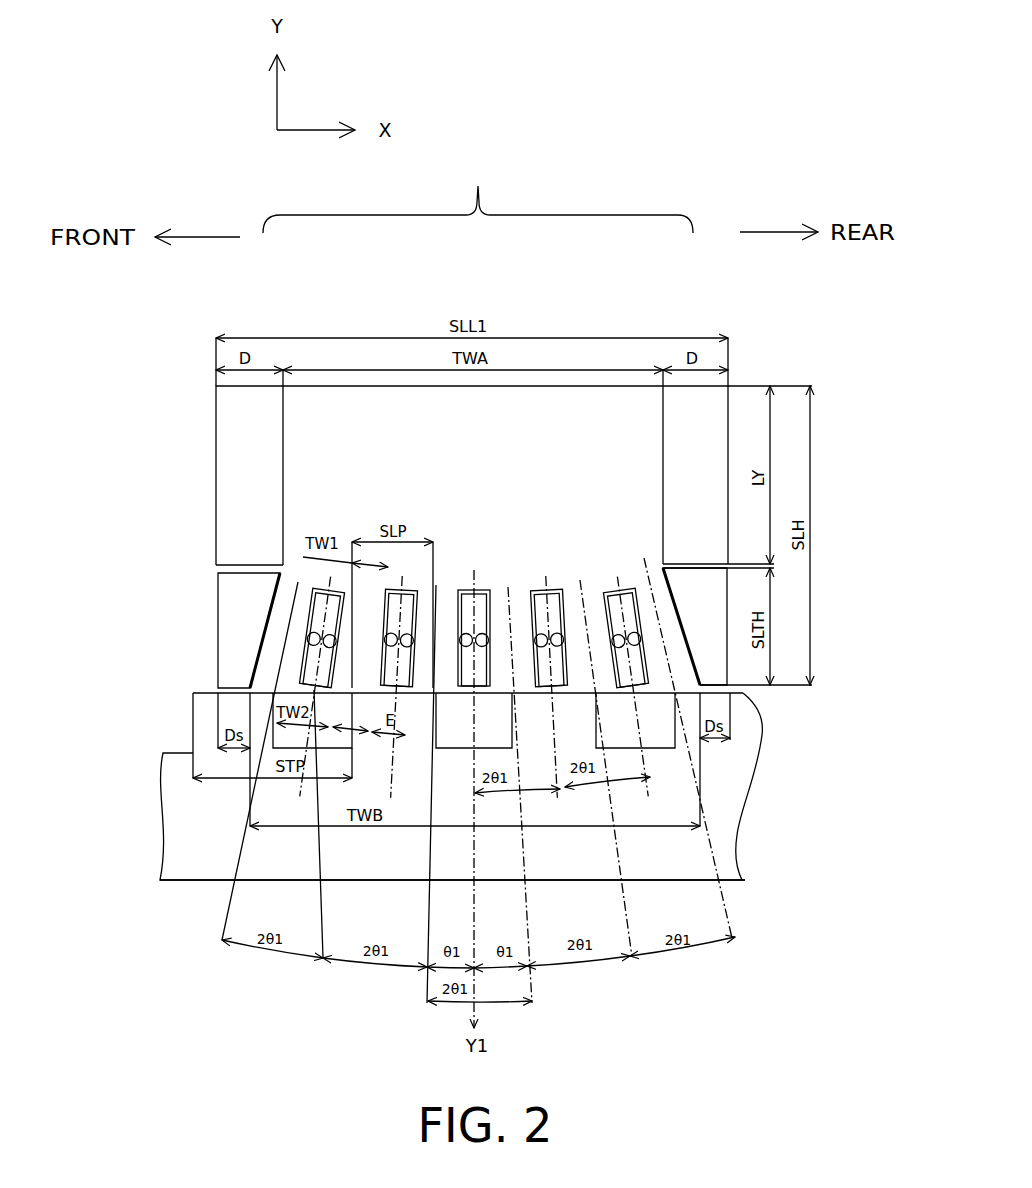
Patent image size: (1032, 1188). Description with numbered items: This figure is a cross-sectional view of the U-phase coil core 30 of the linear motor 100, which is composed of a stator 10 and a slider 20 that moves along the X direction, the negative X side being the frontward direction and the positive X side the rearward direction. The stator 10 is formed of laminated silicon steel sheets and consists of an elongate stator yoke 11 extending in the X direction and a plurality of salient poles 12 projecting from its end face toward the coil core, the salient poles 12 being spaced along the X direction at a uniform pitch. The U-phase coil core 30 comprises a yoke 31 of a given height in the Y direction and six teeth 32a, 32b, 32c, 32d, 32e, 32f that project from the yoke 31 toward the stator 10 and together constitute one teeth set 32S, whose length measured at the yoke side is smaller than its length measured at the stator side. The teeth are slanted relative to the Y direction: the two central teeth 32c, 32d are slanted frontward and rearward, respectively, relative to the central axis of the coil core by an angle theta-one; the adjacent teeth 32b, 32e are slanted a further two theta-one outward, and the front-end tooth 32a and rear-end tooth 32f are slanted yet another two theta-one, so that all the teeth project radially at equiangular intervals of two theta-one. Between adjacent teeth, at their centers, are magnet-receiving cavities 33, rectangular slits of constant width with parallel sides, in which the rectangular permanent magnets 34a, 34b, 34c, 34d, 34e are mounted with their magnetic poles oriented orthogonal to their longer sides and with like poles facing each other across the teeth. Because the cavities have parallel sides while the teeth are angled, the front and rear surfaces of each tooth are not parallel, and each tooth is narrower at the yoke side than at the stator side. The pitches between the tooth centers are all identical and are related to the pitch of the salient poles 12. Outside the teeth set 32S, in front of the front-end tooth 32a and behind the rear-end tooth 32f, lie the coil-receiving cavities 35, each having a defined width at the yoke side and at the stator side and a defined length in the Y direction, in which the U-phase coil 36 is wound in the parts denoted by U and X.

The linear motor 100 is at (712, 212).
The stator 10 is at (162, 823).
The stator yoke 11 is at (182, 852).
The salient pole 12 is at (207, 727).
The slider 20 is at (777, 365).
The U-phase coil core 30 is at (750, 350).
The yoke 31 is at (712, 448).
The teeth set 32S is at (478, 194).
The front-end tooth 32a is at (285, 603).
The tooth 32b is at (375, 603).
The central tooth 32c is at (445, 603).
The central tooth 32d is at (517, 605).
The tooth 32e is at (588, 605).
The rear-end tooth 32f is at (653, 610).
The magnet-receiving cavity 33 is at (328, 593).
The permanent magnet 34a is at (312, 680).
The permanent magnet 34b is at (400, 686).
The permanent magnet 34c is at (465, 688).
The permanent magnet 34d is at (548, 688).
The permanent magnet 34e is at (635, 678).
The coil-receiving cavity 35 is at (250, 570).
The U-phase coil 36 is at (220, 650).